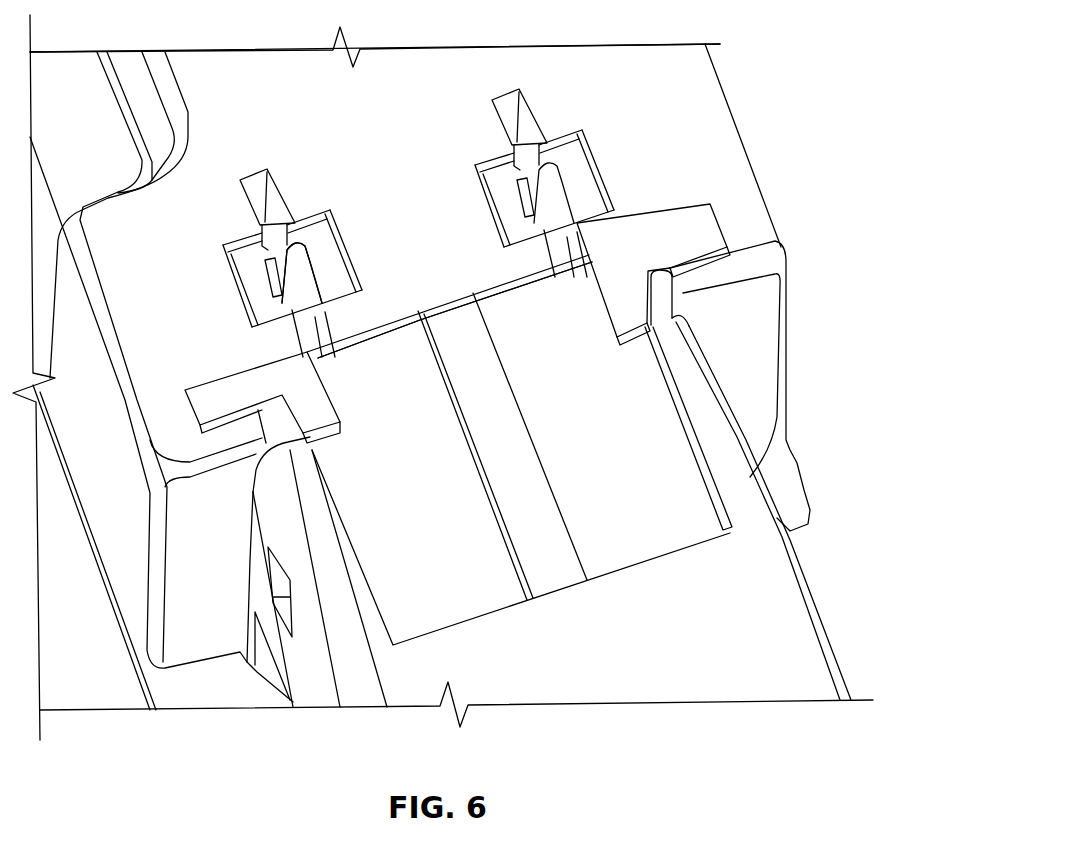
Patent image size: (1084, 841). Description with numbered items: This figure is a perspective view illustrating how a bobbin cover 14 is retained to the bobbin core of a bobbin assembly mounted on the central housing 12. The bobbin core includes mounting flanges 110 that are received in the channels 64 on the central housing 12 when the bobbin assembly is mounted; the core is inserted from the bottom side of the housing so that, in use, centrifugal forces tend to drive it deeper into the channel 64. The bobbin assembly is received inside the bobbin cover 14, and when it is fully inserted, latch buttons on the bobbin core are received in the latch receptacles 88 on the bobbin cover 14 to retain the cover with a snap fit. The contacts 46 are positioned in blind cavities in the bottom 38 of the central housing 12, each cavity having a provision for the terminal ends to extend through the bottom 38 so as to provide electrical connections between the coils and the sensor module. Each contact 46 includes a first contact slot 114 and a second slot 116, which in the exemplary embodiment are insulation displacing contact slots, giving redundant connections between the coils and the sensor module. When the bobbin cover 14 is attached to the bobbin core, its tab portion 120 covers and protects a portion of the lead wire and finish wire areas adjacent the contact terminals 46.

The central housing 12 is at (654, 50).
The bobbin cover 14 is at (820, 622).
The bottom of central housing 38 is at (390, 143).
The contact 46 is at (247, 257).
The channel 64 is at (707, 215).
The latch receptacle 88 is at (273, 580).
The mounting flange 110 is at (200, 410).
The first contact slot 114 is at (318, 288).
The second slot 116 is at (297, 223).
The tab portion 120 is at (378, 366).